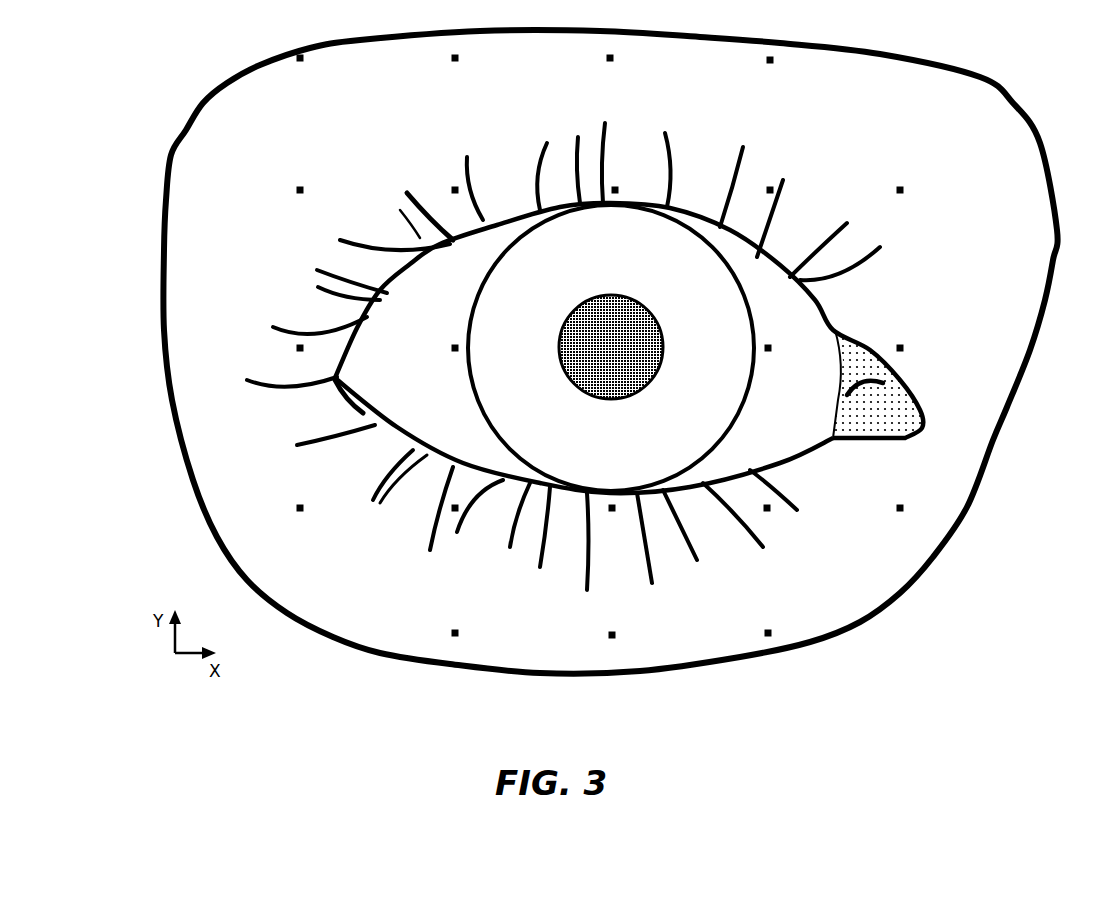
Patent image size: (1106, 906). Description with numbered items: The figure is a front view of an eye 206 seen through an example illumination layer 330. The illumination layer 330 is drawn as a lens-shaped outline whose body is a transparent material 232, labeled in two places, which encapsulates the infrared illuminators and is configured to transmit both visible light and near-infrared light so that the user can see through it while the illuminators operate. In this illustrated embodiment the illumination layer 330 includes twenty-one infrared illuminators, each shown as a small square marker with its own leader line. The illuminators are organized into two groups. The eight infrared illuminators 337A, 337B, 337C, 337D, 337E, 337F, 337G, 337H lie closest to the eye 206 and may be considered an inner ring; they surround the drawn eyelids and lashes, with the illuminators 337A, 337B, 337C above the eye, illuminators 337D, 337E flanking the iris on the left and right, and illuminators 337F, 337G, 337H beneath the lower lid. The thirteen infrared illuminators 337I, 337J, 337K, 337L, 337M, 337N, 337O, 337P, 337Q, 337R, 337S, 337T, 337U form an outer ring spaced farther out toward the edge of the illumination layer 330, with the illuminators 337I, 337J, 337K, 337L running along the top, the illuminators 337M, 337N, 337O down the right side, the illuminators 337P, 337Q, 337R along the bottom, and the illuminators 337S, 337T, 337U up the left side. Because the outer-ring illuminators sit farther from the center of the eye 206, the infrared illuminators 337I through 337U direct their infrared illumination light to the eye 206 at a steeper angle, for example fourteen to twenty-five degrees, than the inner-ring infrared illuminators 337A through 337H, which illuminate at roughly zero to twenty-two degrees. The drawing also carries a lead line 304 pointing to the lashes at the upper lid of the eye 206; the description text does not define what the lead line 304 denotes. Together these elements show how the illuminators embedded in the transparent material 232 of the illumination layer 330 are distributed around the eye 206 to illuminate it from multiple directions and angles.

The illumination layer 330 is at (977, 76).
The transparent material 232 is at (663, 359).
The eye 206 is at (831, 314).
The eyelashes 304 is at (420, 240).
The infrared illuminator 337A is at (455, 188).
The infrared illuminator 337B is at (616, 188).
The infrared illuminator 337C is at (770, 188).
The infrared illuminator 337D is at (456, 346).
The infrared illuminator 337E is at (768, 348).
The infrared illuminator 337F is at (455, 508).
The infrared illuminator 337G is at (612, 508).
The infrared illuminator 337H is at (767, 508).
The infrared illuminator 337I is at (300, 58).
The infrared illuminator 337J is at (455, 58).
The infrared illuminator 337K is at (610, 58).
The infrared illuminator 337L is at (770, 60).
The infrared illuminator 337M is at (900, 190).
The infrared illuminator 337N is at (900, 348).
The infrared illuminator 337O is at (900, 506).
The infrared illuminator 337P is at (768, 631).
The infrared illuminator 337Q is at (612, 633).
The infrared illuminator 337R is at (455, 631).
The infrared illuminator 337S is at (300, 506).
The infrared illuminator 337T is at (300, 346).
The infrared illuminator 337U is at (300, 188).